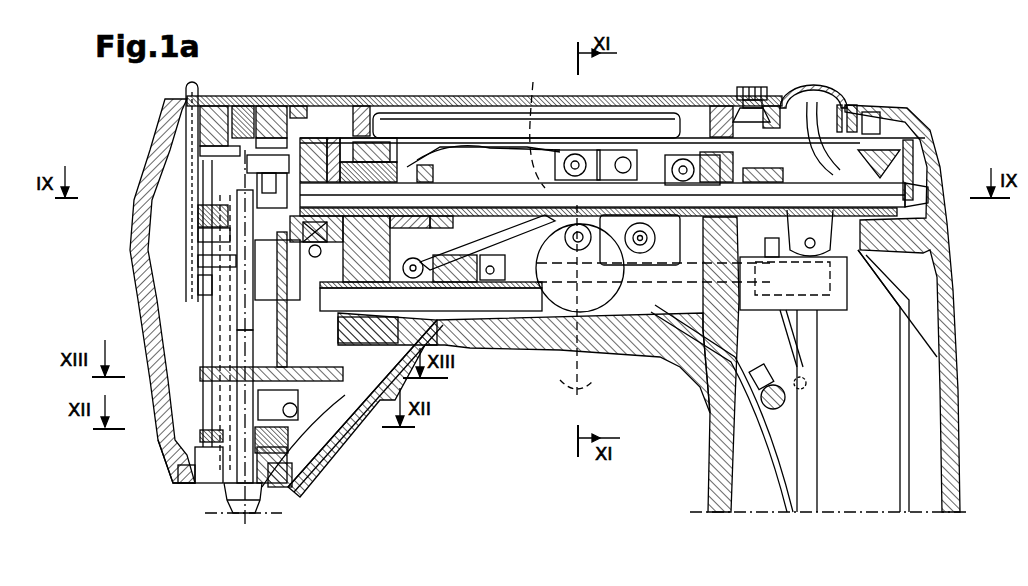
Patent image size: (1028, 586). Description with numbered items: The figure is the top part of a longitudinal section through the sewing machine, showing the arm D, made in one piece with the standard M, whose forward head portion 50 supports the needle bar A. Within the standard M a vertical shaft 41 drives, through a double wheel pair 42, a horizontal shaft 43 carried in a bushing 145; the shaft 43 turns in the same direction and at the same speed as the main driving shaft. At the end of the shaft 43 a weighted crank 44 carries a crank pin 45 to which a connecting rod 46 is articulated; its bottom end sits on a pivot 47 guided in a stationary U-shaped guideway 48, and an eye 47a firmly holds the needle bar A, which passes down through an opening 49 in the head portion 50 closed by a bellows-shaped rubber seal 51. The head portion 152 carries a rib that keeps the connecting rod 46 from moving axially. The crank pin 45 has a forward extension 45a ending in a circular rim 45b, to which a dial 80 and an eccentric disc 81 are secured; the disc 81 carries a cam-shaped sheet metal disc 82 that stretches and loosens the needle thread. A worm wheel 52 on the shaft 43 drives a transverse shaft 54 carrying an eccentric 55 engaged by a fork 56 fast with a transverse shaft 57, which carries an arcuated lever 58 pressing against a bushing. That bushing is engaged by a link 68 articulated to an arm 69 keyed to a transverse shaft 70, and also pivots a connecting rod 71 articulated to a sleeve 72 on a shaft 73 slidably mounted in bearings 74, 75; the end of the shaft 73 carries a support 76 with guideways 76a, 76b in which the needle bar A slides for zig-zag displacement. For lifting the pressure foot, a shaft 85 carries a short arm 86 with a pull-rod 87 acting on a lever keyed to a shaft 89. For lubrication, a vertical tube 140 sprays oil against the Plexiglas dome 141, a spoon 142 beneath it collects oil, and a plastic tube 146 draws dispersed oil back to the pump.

The vertical shaft 41 is at (808, 466).
The double wheel pair 42 is at (783, 178).
The horizontal shaft 43 is at (913, 187).
The weighted crank 44 is at (340, 130).
The crank pin 45 is at (250, 174).
The forward extension 45a is at (240, 232).
The circular rim 45b is at (198, 238).
The connecting rod 46 is at (318, 130).
The pivot 47 is at (312, 428).
The eye 47a is at (205, 345).
The stationary guideway 48 is at (330, 413).
The opening 49 is at (228, 490).
The head portion 50 is at (226, 478).
The rubber seal 51 is at (198, 283).
The worm wheel 52 is at (622, 195).
The transverse shaft 54 is at (690, 247).
The eccentric 55 is at (650, 256).
The fork 56 is at (655, 335).
The transverse shaft 57 is at (630, 312).
The arcuated lever 58 is at (577, 401).
The link 68 is at (546, 124).
The arm 69 is at (582, 168).
The transverse shaft 70 is at (687, 150).
The connecting rod 71 is at (541, 226).
The sleeve 72 is at (500, 293).
The shaft 73 is at (500, 340).
The bearing 74 is at (540, 298).
The bearing 75 is at (360, 328).
The support 76 is at (297, 326).
The guideway 76a is at (198, 262).
The guideway 76b is at (163, 450).
The dial 80 is at (196, 213).
The eccentric disc 81 is at (190, 165).
The sheet metal disc 82 is at (178, 106).
The shaft 85 is at (793, 402).
The short arm 86 is at (787, 397).
The pull-rod 87 is at (788, 338).
The shaft 89 is at (847, 290).
The vertical tube 140 is at (900, 497).
The dome 141 is at (830, 88).
The spoon 142 is at (793, 130).
The bushing 145 is at (402, 187).
The tube 146 is at (300, 455).
The head portion 152 is at (298, 485).
The needle bar A is at (203, 318).
The arm D is at (594, 307).
The standard M is at (947, 464).